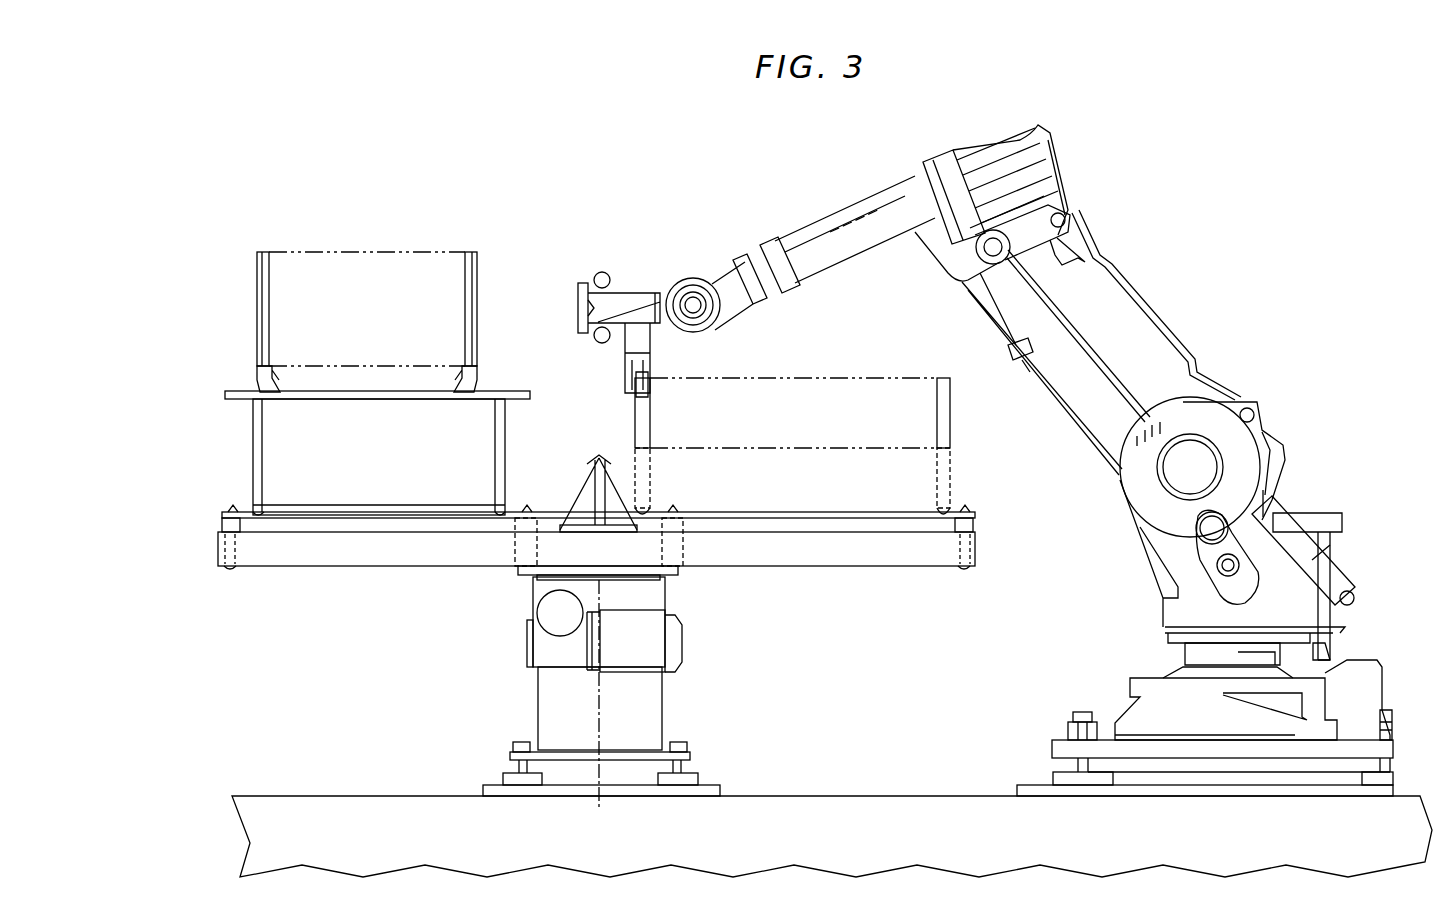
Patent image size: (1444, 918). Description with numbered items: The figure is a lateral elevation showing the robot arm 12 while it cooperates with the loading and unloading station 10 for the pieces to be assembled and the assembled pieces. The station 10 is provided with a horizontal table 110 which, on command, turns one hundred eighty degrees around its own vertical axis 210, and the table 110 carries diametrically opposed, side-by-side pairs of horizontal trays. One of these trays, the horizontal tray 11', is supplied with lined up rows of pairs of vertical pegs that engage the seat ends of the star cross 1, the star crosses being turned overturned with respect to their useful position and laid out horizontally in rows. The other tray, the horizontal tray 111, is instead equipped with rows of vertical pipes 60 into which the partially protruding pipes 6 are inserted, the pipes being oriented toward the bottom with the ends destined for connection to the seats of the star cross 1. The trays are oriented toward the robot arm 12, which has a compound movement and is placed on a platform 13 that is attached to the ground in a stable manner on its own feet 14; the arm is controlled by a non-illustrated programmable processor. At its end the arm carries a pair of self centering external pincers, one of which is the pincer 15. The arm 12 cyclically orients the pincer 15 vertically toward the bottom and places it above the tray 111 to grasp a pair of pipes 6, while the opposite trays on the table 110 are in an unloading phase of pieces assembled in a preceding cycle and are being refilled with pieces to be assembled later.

The star cross 1 is at (263, 378).
The pipe 6 is at (258, 295).
The station 10 is at (596, 540).
The horizontal tray 11' is at (377, 453).
The robot arm 12 is at (1011, 460).
The platform 13 is at (1052, 750).
The feet 14 is at (1053, 773).
The self centering external pincer 15 is at (630, 350).
The vertical pipe 60 is at (653, 484).
The horizontal table 110 is at (343, 548).
The horizontal tray 111 is at (802, 512).
The vertical axis 210 is at (600, 720).